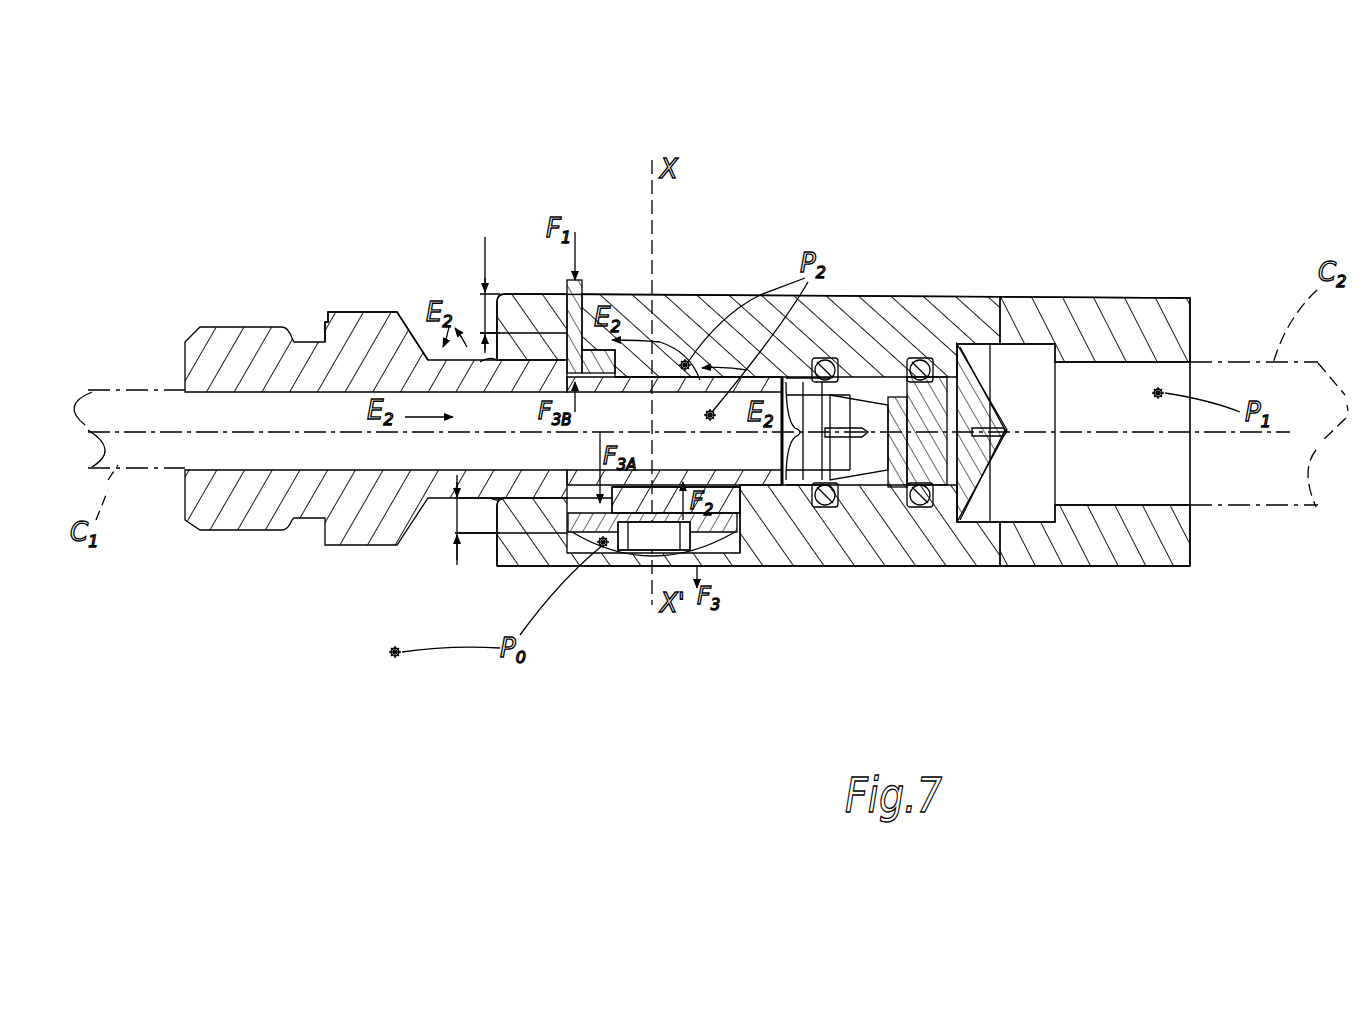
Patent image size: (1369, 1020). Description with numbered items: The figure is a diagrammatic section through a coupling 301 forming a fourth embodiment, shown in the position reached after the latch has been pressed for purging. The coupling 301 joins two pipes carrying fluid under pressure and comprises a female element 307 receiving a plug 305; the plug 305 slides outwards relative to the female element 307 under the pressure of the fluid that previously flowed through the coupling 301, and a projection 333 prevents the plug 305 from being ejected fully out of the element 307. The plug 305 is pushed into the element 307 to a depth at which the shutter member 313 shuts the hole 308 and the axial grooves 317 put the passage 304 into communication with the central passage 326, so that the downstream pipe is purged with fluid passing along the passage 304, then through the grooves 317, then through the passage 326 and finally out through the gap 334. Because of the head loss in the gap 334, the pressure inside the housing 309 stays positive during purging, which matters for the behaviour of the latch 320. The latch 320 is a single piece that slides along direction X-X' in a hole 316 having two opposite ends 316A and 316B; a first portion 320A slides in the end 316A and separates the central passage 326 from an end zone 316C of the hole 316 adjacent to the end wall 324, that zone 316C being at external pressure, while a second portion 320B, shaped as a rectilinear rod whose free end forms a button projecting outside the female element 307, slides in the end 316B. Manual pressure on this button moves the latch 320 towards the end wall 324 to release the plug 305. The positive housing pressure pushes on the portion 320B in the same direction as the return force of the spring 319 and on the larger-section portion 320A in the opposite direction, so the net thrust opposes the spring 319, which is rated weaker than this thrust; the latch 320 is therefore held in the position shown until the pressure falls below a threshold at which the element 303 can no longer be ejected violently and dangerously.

The coupling 301 is at (1193, 206).
The element 303 is at (224, 515).
The passage 304 is at (185, 404).
The plug 305 is at (726, 482).
The female element 307 is at (940, 325).
The hole 308 is at (1172, 373).
The housing 309 is at (410, 366).
The shutter member 313 is at (1000, 376).
The hole 316 is at (662, 362).
The end of hole 316A is at (458, 520).
The end of hole 316B is at (460, 295).
The end zone of hole 316C is at (637, 540).
The axial grooves 317 is at (860, 395).
The spring 319 is at (683, 567).
The latch 320 is at (597, 296).
The portion of latch 320A is at (716, 562).
The portion of latch 320B is at (537, 293).
The end wall 324 is at (642, 565).
The central passage 326 is at (745, 492).
The projection 333 is at (600, 378).
The gap 334 is at (490, 365).